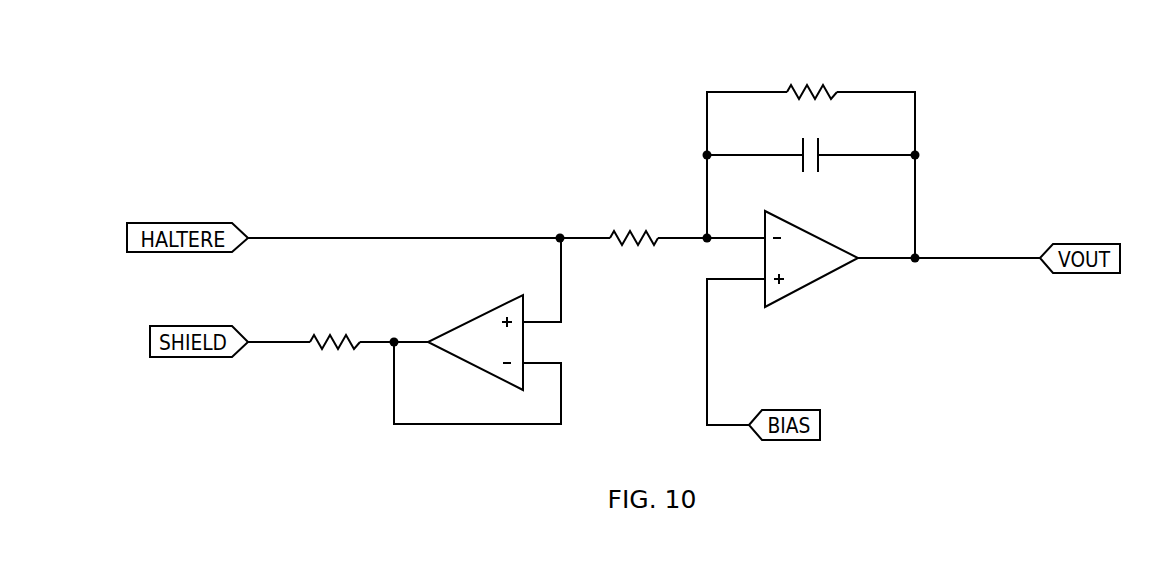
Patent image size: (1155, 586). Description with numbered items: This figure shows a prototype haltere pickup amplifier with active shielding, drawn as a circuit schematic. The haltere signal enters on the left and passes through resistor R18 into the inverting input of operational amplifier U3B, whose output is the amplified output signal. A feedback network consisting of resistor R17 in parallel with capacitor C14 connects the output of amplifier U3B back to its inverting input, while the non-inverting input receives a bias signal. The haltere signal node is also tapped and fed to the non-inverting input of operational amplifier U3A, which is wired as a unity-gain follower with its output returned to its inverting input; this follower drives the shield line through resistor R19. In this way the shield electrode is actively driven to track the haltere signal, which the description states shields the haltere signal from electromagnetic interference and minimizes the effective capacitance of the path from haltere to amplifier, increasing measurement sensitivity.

The feedback resistor R17 is at (812, 77).
The input resistor R18 is at (634, 221).
The shield resistor R19 is at (335, 327).
The feedback capacitor C14 is at (810, 170).
The operational amplifier (shield buffer) U3A is at (475, 341).
The operational amplifier (haltere amplifier) U3B is at (811, 261).